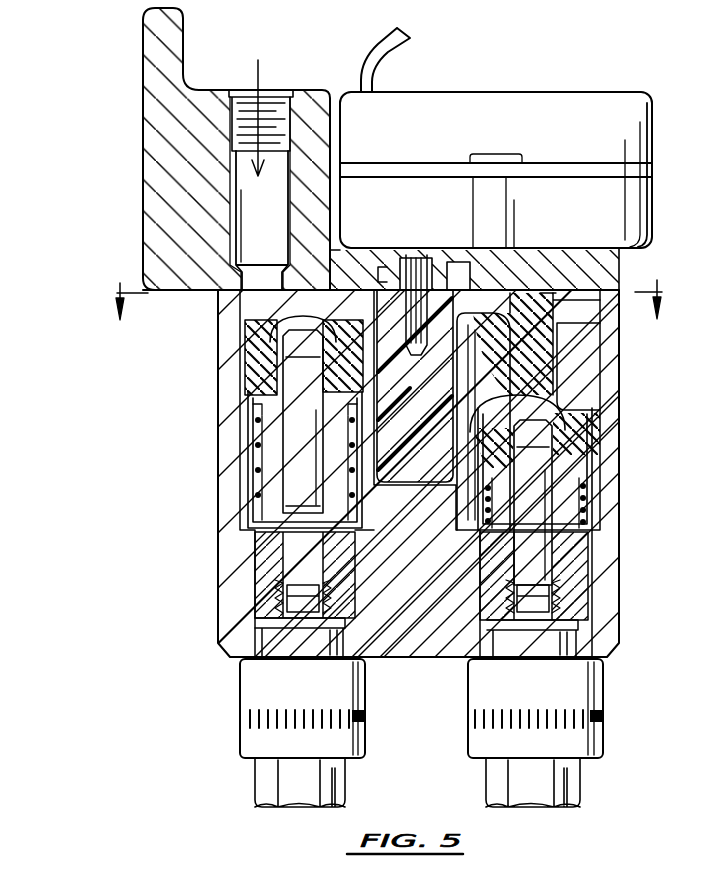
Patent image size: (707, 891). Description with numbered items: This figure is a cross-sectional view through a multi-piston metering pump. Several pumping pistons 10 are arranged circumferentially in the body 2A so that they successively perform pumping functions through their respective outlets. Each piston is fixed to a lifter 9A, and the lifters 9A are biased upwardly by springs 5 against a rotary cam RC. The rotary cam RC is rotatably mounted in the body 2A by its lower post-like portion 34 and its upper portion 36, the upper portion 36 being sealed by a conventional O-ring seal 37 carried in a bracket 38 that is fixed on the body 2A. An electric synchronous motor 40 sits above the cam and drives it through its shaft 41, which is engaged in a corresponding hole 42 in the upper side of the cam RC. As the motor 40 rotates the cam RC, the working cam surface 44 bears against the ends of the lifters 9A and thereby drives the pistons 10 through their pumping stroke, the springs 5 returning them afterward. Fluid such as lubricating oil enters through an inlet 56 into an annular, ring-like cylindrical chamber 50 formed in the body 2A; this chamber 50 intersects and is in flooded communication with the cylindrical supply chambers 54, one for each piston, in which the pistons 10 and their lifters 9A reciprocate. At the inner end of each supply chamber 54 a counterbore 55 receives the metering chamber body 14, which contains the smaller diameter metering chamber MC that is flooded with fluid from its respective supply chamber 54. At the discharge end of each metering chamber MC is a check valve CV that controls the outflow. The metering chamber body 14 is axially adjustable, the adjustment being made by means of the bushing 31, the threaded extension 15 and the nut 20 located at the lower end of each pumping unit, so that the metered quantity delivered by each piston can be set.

The body 2A is at (621, 574).
The springs 5 is at (253, 495).
The lifter 9A is at (257, 343).
The pumping pistons 10 is at (638, 451).
The metering chamber body 14 is at (257, 547).
The threaded extension 15 is at (487, 600).
The nut 20 is at (250, 707).
The bushing 31 is at (273, 640).
The lower post-like portion 34 is at (443, 437).
The upper portion 36 is at (376, 266).
The O-ring seal 37 is at (385, 280).
The bracket 38 is at (143, 172).
The electric synchronous motor 40 is at (600, 58).
The shaft 41 is at (435, 298).
The hole 42 is at (410, 322).
The working cam surface 44 is at (512, 410).
The annular cylindrical chamber 50 is at (290, 462).
The cylindrical supply chambers 54 is at (247, 433).
The counterbore 55 is at (470, 583).
The inlet 56 is at (280, 100).
The check valve CV is at (267, 593).
The metering chamber MC is at (302, 573).
The rotary cam RC is at (548, 294).